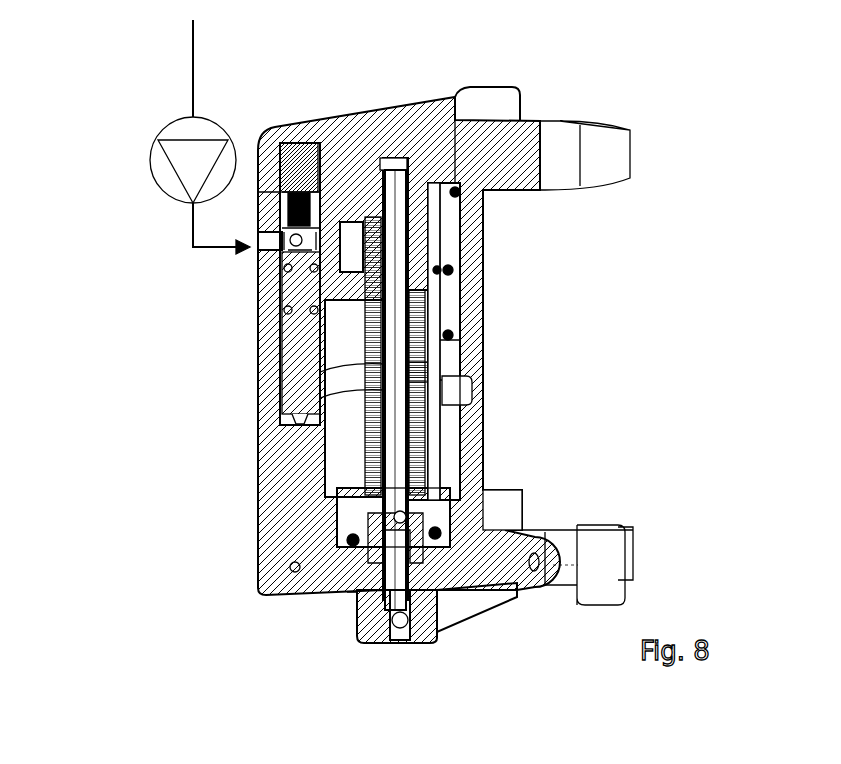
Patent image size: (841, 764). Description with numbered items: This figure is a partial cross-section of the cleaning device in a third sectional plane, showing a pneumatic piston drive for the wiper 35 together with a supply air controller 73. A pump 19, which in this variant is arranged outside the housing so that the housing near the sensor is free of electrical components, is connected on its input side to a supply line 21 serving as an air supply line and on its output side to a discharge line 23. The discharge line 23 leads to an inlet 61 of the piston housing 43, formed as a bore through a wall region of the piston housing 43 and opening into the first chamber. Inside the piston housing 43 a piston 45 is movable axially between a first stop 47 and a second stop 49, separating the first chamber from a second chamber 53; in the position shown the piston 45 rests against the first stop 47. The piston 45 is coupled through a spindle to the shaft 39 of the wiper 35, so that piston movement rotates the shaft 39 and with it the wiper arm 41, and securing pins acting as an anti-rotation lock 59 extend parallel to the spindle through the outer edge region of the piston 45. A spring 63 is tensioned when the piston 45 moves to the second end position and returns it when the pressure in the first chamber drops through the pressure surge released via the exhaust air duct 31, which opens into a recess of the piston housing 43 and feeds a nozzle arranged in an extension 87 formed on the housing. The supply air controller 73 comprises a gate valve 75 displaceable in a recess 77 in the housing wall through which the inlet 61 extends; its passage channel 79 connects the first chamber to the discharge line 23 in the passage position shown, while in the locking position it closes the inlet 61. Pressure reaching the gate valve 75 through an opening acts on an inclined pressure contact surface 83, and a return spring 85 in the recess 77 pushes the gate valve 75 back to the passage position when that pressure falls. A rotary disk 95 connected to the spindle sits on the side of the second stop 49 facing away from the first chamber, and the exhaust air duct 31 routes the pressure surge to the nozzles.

The pump 19 is at (185, 165).
The supply line 21 is at (190, 60).
The discharge line 23 is at (193, 235).
The exhaust air duct 31 is at (282, 586).
The wiper 35 is at (416, 635).
The shaft 39 is at (358, 608).
The wiper arm 41 is at (486, 598).
The piston housing 43 is at (262, 389).
The piston 45 is at (448, 297).
The first stop 47 is at (453, 108).
The second stop 49 is at (480, 460).
The second chamber 53 is at (457, 362).
The anti-rotation lock 59 is at (443, 443).
The inlet 61 is at (260, 248).
The spring 63 is at (372, 466).
The supply air controller 73 is at (388, 200).
The gate valve 75 is at (300, 385).
The recess 77 is at (322, 215).
The passage channel 79 is at (318, 236).
The pressure contact surface 83 is at (296, 406).
The return spring 85 is at (308, 140).
The extension 87 is at (556, 557).
The rotary disk 95 is at (345, 522).